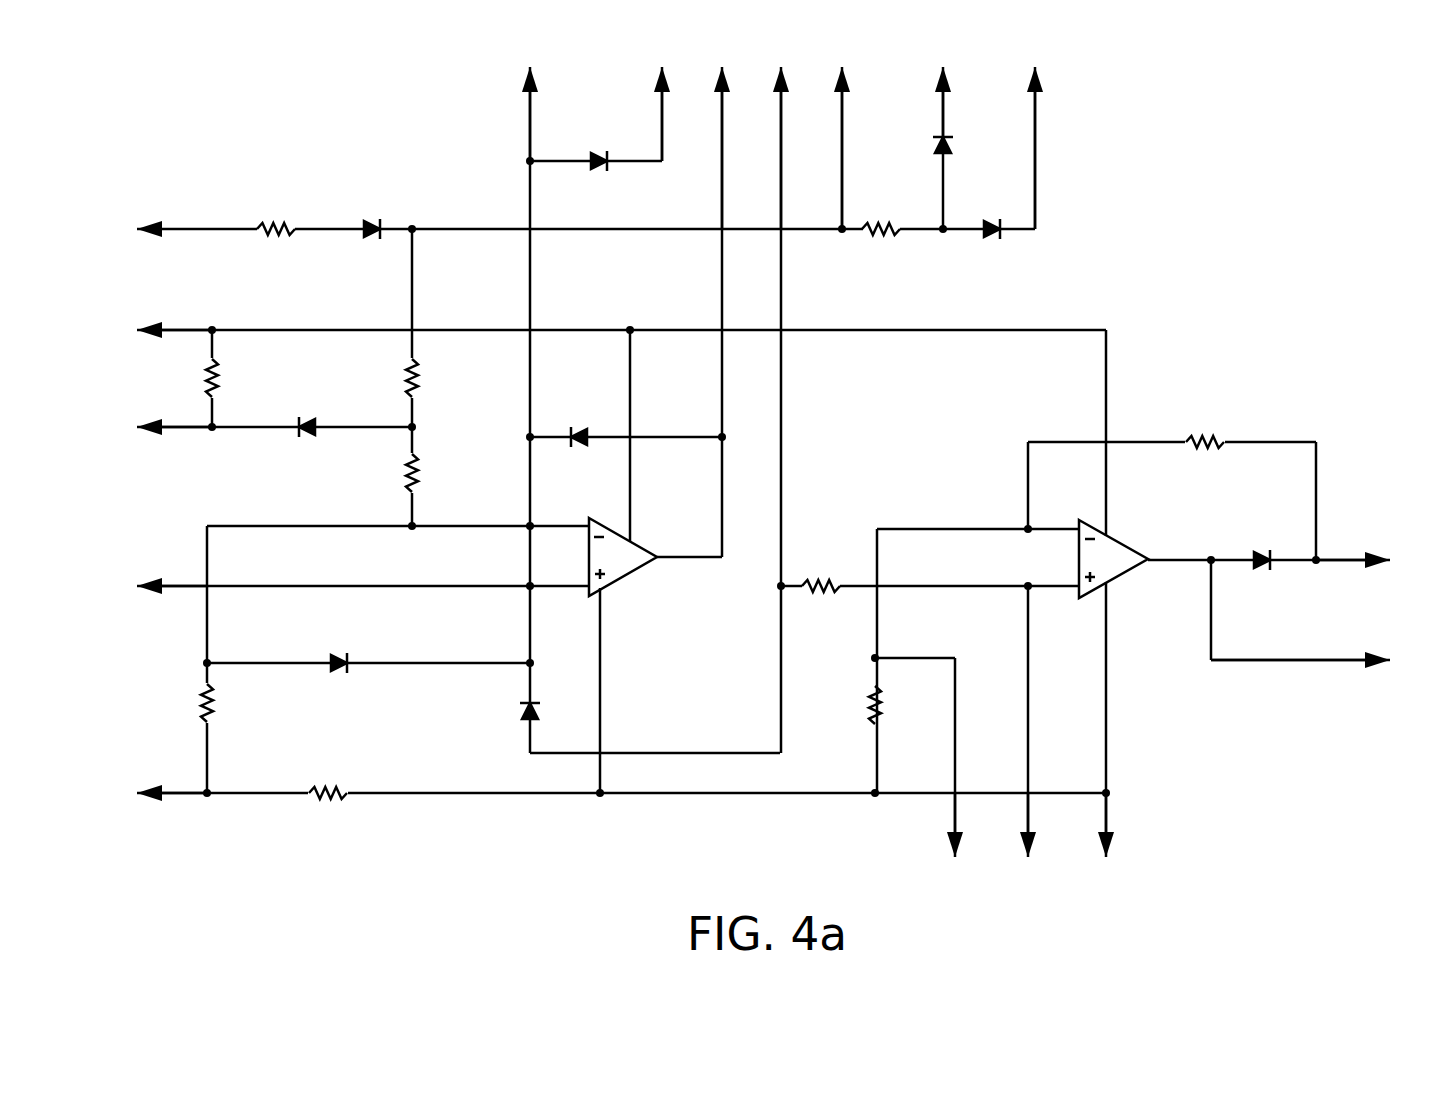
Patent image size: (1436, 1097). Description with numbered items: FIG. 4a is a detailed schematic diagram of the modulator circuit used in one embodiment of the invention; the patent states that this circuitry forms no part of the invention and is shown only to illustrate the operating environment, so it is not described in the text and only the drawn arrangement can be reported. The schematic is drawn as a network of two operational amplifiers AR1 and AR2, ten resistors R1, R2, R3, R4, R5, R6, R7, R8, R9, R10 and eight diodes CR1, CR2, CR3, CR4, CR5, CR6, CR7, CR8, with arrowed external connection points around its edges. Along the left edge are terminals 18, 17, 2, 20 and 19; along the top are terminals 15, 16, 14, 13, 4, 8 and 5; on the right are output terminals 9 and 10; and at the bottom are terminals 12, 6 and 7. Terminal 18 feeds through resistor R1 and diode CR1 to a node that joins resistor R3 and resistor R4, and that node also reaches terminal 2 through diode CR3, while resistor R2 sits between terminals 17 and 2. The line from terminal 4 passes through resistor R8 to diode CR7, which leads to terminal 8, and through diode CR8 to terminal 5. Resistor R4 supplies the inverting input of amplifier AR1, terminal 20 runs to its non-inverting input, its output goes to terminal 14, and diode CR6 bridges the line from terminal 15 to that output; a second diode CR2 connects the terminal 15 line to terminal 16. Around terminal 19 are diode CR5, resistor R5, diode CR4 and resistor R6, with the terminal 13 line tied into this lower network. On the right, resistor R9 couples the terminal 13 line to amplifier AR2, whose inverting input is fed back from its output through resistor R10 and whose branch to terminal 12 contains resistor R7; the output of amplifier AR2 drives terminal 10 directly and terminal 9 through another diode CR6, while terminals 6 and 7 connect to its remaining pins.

The terminal 18 is at (185, 229).
The terminal 17 is at (164, 329).
The terminal 2 is at (164, 427).
The terminal 20 is at (155, 585).
The terminal 19 is at (157, 794).
The terminal 15 is at (534, 100).
The terminal 16 is at (665, 100).
The terminal 14 is at (725, 134).
The terminal 13 is at (784, 134).
The terminal 4 is at (842, 134).
The terminal 8 is at (943, 88).
The terminal 5 is at (1035, 134).
The terminal 9 is at (1364, 562).
The terminal 10 is at (1315, 662).
The terminal 12 is at (953, 840).
The terminal 6 is at (1026, 840).
The terminal 7 is at (1105, 840).
The resistor R1 10K 2% R1 is at (293, 204).
The resistor R2 4K R2 is at (229, 380).
The resistor R3 50K R3 is at (434, 380).
The resistor R4 57K R4 is at (434, 475).
The resistor R5 130K R5 is at (232, 704).
The resistor R6 24.3K R6 is at (334, 769).
The resistor R7 464K R7 is at (847, 700).
The resistor R8 2K R8 is at (884, 256).
The resistor R9 49.9K R9 is at (825, 564).
The resistor R10 150K R10 is at (1210, 416).
The diode CR1 S133 CR1 is at (377, 206).
The diode CR2 S133 CR2 is at (595, 139).
The diode CR3 S133 CR3 is at (305, 453).
The diode CR4 S133 CR4 is at (503, 705).
The diode CR5 S133 CR5 is at (337, 640).
The diode CR6 S133 CR6 is at (914, 474).
The diode CR7 S133 CR7 is at (910, 144).
The diode CR8 S133 CR8 is at (986, 254).
The operational amplifier AR1 CA3140 AR1 is at (648, 569).
The operational amplifier AR2 741 AR2 is at (1115, 567).